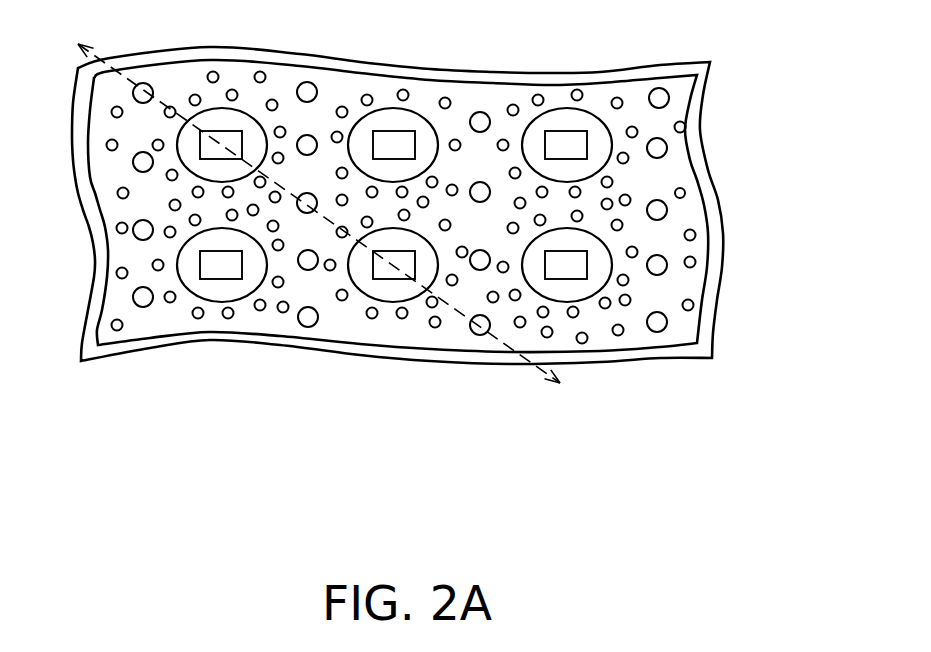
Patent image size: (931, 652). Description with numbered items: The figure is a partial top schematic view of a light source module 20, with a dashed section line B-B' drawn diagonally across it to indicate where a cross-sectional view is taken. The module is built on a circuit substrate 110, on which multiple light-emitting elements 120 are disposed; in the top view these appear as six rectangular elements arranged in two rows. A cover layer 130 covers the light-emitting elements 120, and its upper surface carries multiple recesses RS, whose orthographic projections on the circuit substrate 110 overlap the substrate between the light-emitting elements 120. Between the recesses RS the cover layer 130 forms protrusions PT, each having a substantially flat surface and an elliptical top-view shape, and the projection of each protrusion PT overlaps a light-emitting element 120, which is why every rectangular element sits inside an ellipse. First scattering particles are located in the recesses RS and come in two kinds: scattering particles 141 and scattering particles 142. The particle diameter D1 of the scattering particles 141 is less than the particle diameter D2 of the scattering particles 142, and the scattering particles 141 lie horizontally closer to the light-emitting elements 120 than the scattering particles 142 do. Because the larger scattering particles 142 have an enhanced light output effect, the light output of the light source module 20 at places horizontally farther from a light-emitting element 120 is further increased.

The light source module 20 is at (817, 421).
The circuit substrate 110 is at (708, 325).
The cover layer 130 is at (692, 288).
The light-emitting elements 120 is at (390, 281).
The scattering particles 141 is at (403, 89).
The scattering particles 142 is at (483, 98).
The protrusion PT is at (217, 290).
The recess RS is at (313, 274).
The particle diameter D1 is at (688, 187).
The particle diameter D2 is at (670, 88).
The section line B-B' B is at (318, 217).